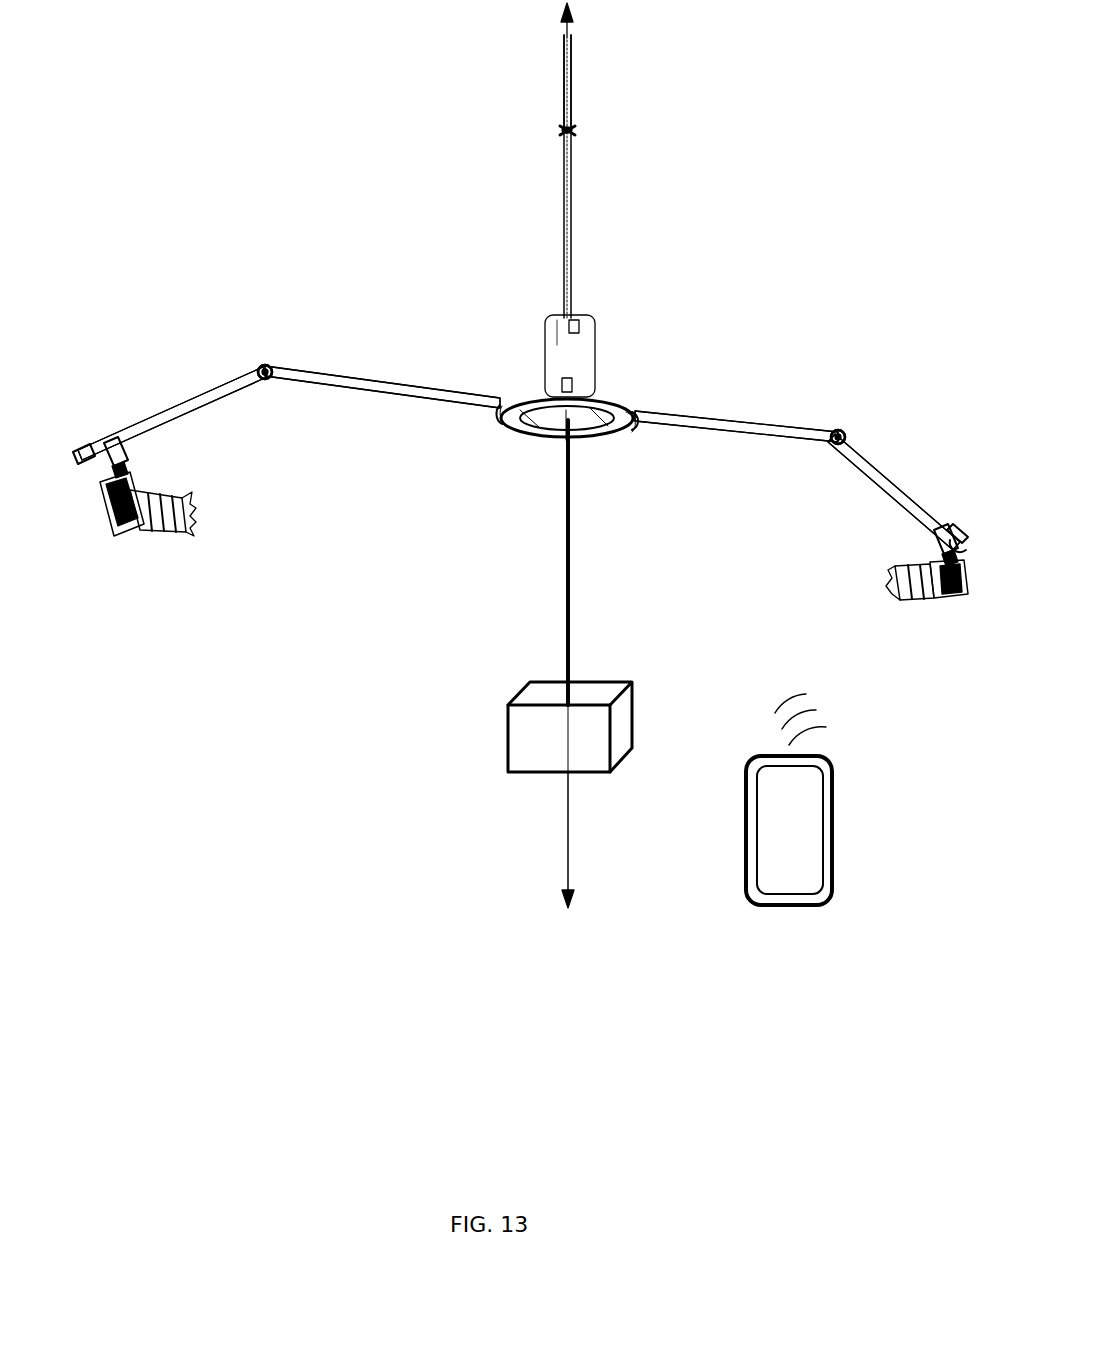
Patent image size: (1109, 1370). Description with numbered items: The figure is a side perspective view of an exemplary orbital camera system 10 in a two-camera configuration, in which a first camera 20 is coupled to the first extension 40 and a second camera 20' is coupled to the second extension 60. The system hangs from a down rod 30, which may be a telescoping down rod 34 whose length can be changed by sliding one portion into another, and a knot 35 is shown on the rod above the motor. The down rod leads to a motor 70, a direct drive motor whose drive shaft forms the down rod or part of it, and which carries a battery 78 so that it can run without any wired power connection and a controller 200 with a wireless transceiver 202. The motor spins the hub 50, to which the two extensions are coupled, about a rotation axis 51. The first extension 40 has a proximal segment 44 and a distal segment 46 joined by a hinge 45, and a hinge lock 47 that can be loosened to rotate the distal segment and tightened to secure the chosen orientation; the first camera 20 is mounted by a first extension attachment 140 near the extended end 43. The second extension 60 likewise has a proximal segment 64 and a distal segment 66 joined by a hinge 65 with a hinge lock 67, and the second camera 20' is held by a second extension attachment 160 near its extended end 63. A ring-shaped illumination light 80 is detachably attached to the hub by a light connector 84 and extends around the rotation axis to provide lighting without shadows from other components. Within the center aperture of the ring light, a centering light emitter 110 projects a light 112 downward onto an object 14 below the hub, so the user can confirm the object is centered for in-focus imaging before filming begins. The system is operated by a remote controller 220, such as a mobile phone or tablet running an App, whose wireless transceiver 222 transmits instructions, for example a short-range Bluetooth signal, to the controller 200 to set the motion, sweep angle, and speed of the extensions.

The orbital camera system 10 is at (337, 140).
The object 14 is at (540, 746).
The first camera 20 is at (161, 566).
The second camera 20' is at (906, 614).
The down rod 30 is at (563, 75).
The telescoping down rod 34 is at (563, 128).
The knot 35 is at (563, 236).
The first extension 40 is at (308, 374).
The extended end 43 is at (74, 446).
The proximal segment 44 is at (378, 380).
The hinge 45 is at (266, 384).
The distal segment 46 is at (170, 406).
The hinge lock 47 is at (265, 364).
The hub 50 is at (610, 398).
The rotation axis 51 is at (566, 814).
The second extension 60 is at (832, 430).
The extended end 63 is at (964, 540).
The proximal segment 64 is at (708, 422).
The hinge 65 is at (834, 446).
The distal segment 66 is at (880, 470).
The joint pivot 67 is at (846, 444).
The motor 70 is at (594, 330).
The battery 78 is at (560, 330).
The illumination light 80 is at (518, 436).
The light connector 84 is at (632, 442).
The centering light emitter 110 is at (562, 448).
The light 112 is at (565, 608).
The first extension attachment 140 is at (112, 436).
The second extension attachment 160 is at (942, 528).
The controller 200 is at (580, 316).
The wireless transceiver 202 is at (558, 374).
The remote controller 220 is at (756, 760).
The wireless transceiver 222 is at (824, 764).